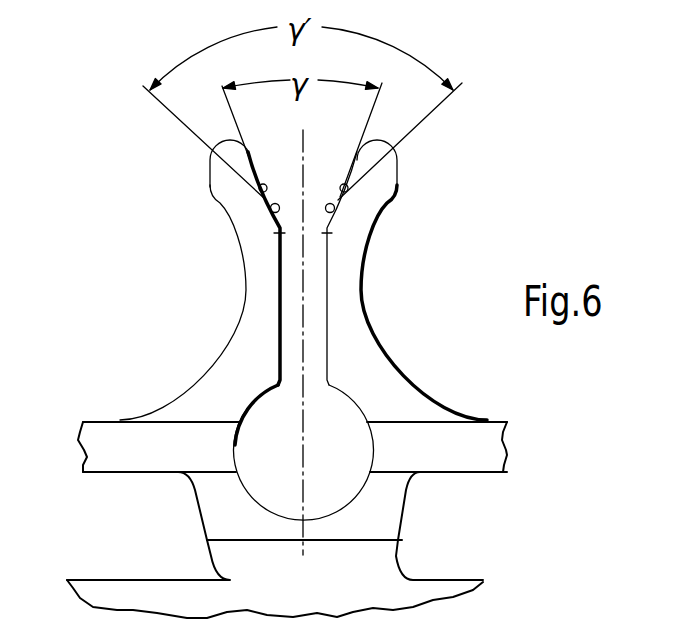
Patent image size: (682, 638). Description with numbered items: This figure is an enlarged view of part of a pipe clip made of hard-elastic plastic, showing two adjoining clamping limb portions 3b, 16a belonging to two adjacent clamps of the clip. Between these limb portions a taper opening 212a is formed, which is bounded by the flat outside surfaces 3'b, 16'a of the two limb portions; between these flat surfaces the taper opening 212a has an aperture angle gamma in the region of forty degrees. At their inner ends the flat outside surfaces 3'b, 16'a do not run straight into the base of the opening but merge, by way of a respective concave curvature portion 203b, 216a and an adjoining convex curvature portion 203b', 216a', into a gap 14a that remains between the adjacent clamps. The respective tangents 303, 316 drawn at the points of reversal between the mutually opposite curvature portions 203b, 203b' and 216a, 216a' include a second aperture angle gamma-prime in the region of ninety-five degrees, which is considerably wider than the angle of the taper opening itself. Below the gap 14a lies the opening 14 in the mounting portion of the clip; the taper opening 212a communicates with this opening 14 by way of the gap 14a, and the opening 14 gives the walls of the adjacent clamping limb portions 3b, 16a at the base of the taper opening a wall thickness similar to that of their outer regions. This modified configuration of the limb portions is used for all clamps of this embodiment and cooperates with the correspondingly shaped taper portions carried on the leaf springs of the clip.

The clamping limb portion 3b is at (255, 315).
The clamping limb portion 16a is at (343, 317).
The opening 14 is at (343, 440).
The gap 14a is at (292, 363).
The taper opening 212a is at (322, 181).
The concave curvature portion 203b is at (207, 268).
The convex curvature portion 203b' is at (203, 240).
The concave curvature portion 216a is at (399, 268).
The convex curvature portion 216a' is at (402, 240).
The tangent 303 is at (172, 113).
The tangent 316 is at (428, 117).
The flat outside surface 3'b is at (215, 132).
The flat outside surface 16'a is at (385, 138).